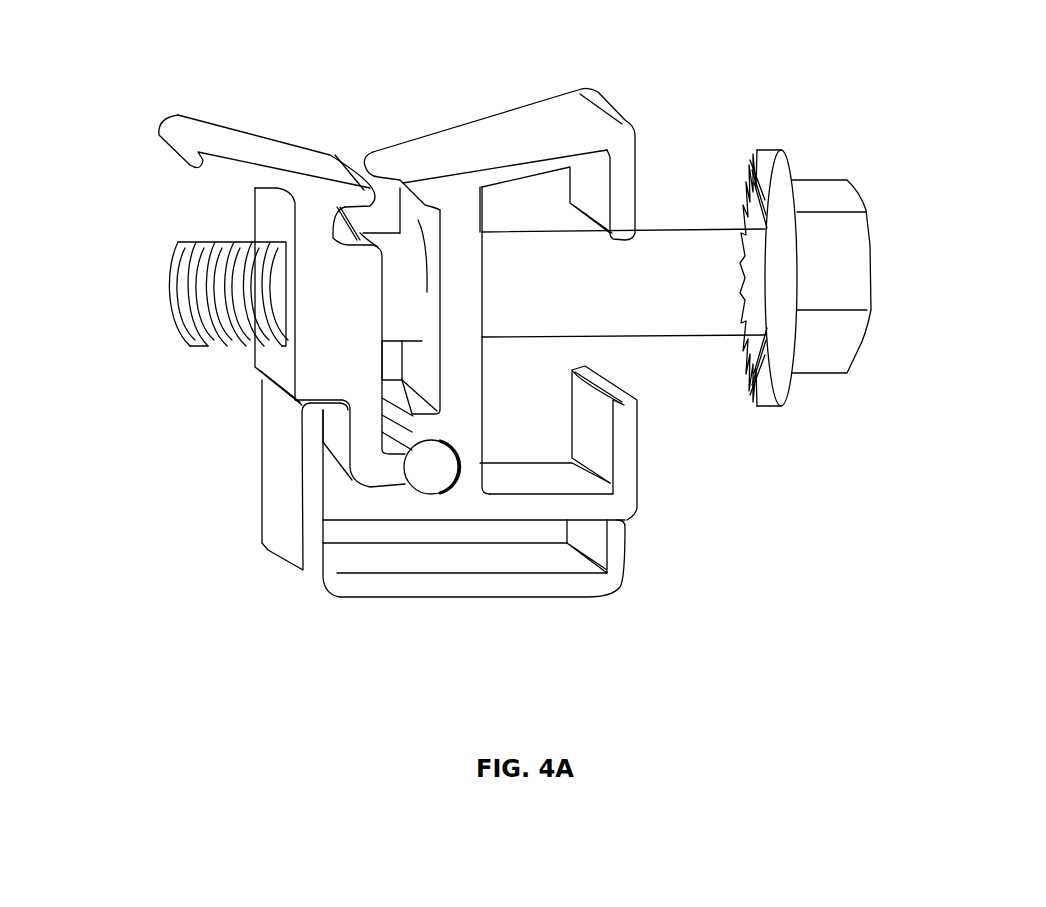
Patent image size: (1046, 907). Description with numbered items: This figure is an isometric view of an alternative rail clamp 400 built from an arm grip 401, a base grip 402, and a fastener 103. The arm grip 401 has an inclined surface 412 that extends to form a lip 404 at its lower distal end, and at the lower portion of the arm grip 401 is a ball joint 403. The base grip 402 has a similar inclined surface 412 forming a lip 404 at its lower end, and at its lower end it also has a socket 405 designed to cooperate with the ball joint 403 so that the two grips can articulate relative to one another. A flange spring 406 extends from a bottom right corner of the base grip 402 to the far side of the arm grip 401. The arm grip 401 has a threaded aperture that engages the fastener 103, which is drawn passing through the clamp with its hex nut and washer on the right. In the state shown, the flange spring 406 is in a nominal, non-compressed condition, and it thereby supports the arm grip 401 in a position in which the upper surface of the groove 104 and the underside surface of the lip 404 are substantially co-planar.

The clamp assembly 400 is at (501, 351).
The fastener 103 is at (857, 247).
The groove 104 is at (362, 220).
The arm grip 401 is at (312, 335).
The base grip 402 is at (630, 453).
The ball joint 403 is at (422, 472).
The lip 404 is at (433, 193).
The socket 405 is at (448, 492).
The flange spring 406 is at (452, 583).
The inclined surface 412 is at (228, 143).